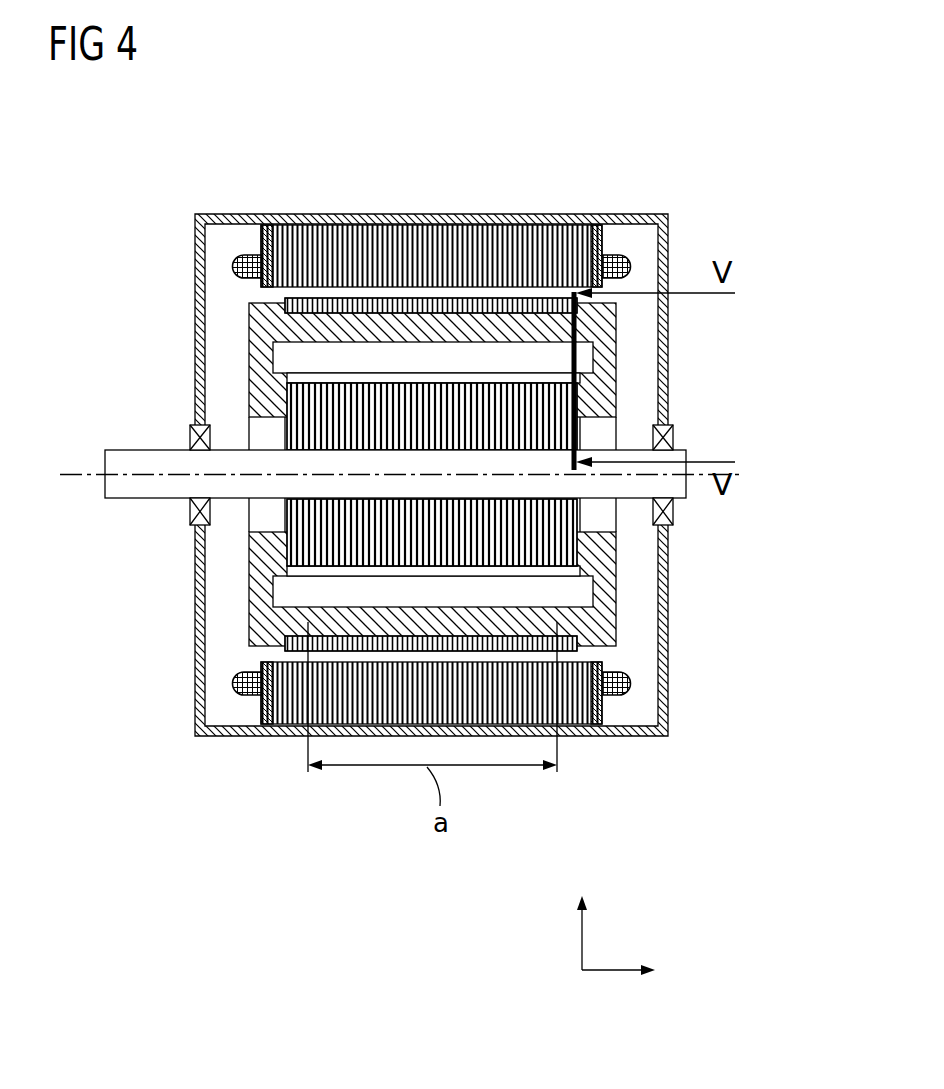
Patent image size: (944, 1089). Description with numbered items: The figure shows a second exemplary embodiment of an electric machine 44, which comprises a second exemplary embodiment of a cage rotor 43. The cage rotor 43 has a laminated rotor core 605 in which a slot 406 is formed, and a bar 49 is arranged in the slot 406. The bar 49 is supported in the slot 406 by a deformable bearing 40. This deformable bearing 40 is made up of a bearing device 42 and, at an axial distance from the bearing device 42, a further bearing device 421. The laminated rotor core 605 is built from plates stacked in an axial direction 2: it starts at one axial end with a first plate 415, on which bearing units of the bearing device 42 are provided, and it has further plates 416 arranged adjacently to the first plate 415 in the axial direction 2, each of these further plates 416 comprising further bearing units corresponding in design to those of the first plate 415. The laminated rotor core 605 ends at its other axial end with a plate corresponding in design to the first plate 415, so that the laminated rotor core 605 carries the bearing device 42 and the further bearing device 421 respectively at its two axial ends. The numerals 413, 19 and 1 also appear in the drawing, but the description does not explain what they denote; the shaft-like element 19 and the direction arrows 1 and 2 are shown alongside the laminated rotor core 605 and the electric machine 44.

The electric machine 44 is at (434, 387).
The cage rotor 43 is at (675, 112).
The deformable bearing 40 is at (370, 474).
The laminated rotor core 605 is at (272, 516).
The further bearing device 421 is at (557, 350).
The bearing device 42 is at (359, 383).
The slot 406 is at (328, 356).
The bar 49 is at (317, 370).
The first plate 415 is at (432, 367).
The lamination stack 413 is at (399, 382).
The further plates 416 is at (300, 399).
The shaft 19 is at (72, 470).
The axial direction 1 is at (582, 942).
The axial direction 2 is at (608, 972).